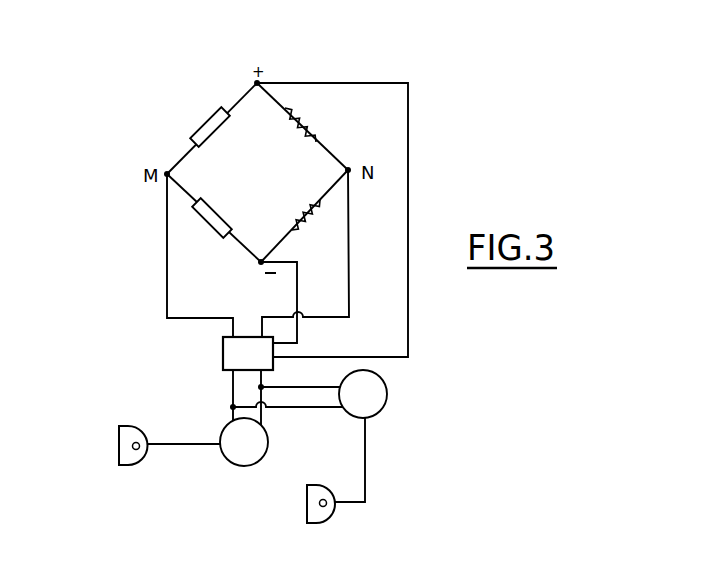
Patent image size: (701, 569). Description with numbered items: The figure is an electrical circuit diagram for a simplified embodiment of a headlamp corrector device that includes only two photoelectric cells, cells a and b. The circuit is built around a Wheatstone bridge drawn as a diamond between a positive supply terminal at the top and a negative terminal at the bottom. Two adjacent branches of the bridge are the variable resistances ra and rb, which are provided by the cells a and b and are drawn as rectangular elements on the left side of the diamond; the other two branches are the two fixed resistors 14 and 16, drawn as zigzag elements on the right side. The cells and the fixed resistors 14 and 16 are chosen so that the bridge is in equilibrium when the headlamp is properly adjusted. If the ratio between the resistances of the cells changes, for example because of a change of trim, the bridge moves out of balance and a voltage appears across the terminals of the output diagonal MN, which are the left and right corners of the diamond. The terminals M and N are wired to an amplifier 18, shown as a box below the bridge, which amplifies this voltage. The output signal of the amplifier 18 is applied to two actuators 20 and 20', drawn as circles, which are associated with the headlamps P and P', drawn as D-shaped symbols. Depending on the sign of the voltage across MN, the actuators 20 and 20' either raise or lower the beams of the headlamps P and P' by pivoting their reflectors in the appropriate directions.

The fixed resistor 14 is at (310, 121).
The fixed resistor 16 is at (311, 225).
The amplifier 18 is at (248, 353).
The actuator 20 is at (227, 458).
The actuator 20' is at (372, 413).
The variable resistance ra is at (204, 118).
The variable resistance rb is at (203, 227).
The headlamp P is at (132, 422).
The headlamp P' is at (297, 508).